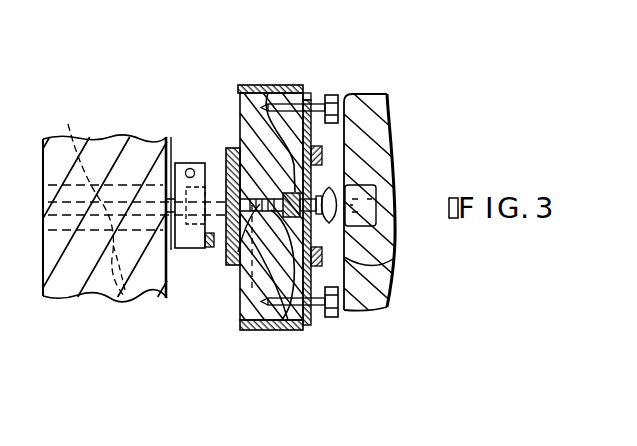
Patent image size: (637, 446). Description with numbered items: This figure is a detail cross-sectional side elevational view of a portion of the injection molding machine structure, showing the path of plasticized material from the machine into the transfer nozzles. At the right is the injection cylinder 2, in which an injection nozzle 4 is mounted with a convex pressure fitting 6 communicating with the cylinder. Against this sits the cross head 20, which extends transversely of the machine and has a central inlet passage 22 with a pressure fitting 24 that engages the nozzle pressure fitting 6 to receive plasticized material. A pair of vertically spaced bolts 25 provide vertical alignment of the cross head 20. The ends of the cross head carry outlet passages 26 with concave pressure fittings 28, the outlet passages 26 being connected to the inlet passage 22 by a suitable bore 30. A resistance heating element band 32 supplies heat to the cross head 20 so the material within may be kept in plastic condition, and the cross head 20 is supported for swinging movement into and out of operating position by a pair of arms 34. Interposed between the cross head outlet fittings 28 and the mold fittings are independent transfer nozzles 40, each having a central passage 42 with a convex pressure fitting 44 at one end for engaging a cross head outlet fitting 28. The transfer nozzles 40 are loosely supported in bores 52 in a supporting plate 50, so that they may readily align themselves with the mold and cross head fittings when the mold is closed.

The injection cylinder 2 is at (372, 96).
The injection nozzle 4 is at (370, 194).
The convex pressure fitting 6 is at (392, 254).
The cross head 20 is at (248, 86).
The central inlet passage 22 is at (272, 96).
The pressure fitting 24 is at (272, 332).
The bolts 25 is at (331, 94).
The outlet passages 26 is at (245, 272).
The concave pressure fittings 28 is at (214, 162).
The bore 30 is at (262, 280).
The resistance heating element band 32 is at (262, 331).
The arms 34 is at (387, 290).
The transfer nozzles 40 is at (220, 172).
The central passage 42 is at (93, 196).
The convex pressure fitting 44 is at (218, 240).
The supporting plate 50 is at (61, 297).
The bores 52 is at (124, 298).